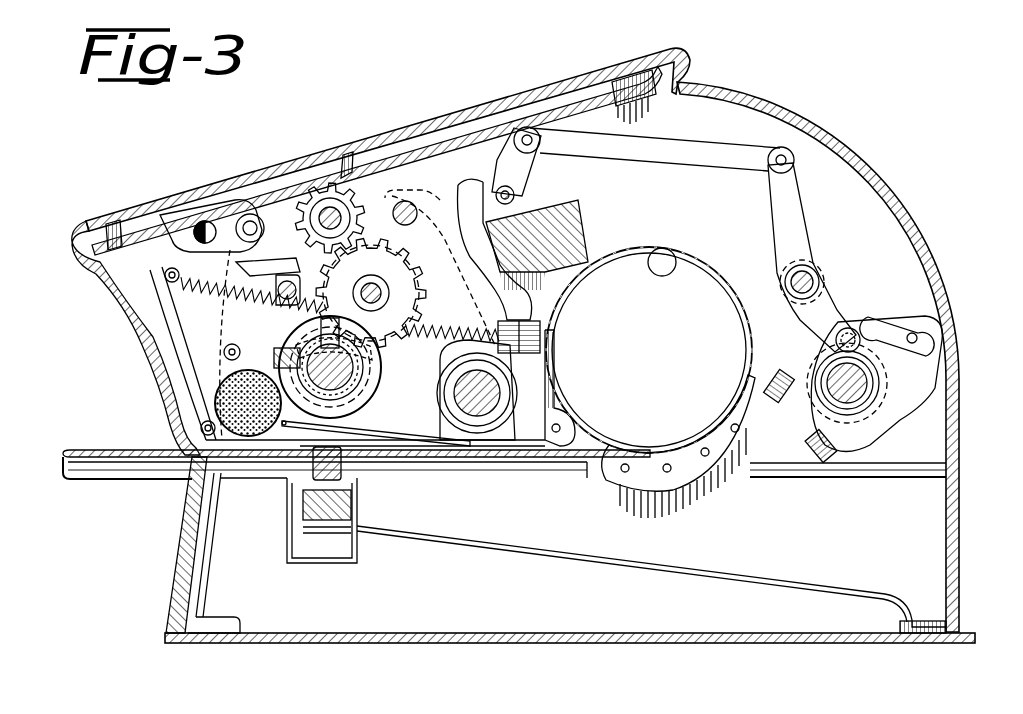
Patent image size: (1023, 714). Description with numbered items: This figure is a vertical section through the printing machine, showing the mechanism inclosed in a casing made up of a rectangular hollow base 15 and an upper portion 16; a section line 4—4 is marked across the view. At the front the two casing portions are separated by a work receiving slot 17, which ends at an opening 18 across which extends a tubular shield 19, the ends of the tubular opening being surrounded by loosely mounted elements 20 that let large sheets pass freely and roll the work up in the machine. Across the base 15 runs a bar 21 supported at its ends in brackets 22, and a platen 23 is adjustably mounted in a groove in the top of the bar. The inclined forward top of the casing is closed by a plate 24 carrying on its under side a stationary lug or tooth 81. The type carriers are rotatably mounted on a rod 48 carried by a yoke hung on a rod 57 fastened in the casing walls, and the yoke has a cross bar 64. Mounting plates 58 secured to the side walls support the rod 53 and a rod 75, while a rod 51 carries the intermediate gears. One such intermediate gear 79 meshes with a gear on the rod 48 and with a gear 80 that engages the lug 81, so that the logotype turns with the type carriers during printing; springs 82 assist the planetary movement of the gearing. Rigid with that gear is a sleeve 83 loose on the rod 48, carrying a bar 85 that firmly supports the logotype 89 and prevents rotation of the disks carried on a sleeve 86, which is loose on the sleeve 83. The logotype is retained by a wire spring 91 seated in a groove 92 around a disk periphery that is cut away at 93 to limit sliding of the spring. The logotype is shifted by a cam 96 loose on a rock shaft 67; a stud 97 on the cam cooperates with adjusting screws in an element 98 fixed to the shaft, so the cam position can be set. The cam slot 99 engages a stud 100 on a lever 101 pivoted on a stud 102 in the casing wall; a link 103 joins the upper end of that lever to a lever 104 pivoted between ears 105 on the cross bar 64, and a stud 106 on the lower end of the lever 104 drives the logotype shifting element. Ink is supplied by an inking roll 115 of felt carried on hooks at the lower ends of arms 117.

The section line 4- 4 is at (504, 221).
The hollow base 15 is at (185, 555).
The upper portion of casing 16 is at (728, 88).
The work receiving slot 17 is at (441, 447).
The opening 18 is at (645, 255).
The shield 19 is at (566, 412).
The loosely mounted elements 20 is at (705, 435).
The bar 21 is at (302, 508).
The brackets 22 is at (366, 556).
The platen 23 is at (305, 478).
The plate 24 is at (440, 110).
The rod 48 is at (345, 400).
The rod 51 is at (392, 298).
The rod 53 is at (400, 190).
The rod 57 is at (490, 420).
The mounting plates 58 is at (195, 222).
The cross bar 64 is at (578, 238).
The rock shaft 67 is at (880, 410).
The rod 75 is at (414, 205).
The intermediate gear 79 is at (400, 275).
The gear 80 is at (340, 196).
The stationary lug or tooth 81 is at (350, 152).
The springs 82 is at (190, 287).
The sleeve 83 is at (362, 402).
The bar 85 is at (305, 340).
The sleeve 86 is at (362, 358).
The logotype 89 is at (310, 362).
The wire spring 91 is at (366, 375).
The groove 92 is at (372, 392).
The cut away portion 93 is at (370, 433).
The cam 96 is at (915, 378).
The stud 97 is at (800, 440).
The element 98 is at (850, 445).
The slot 99 is at (915, 322).
The stud 100 is at (852, 330).
The lever 101 is at (805, 244).
The stud 102 is at (824, 278).
The link 103 is at (696, 150).
The lever 104 is at (522, 173).
The ears 105 is at (540, 200).
The stud 106 is at (545, 330).
The inking roll 115 is at (220, 392).
The arms 117 is at (214, 318).